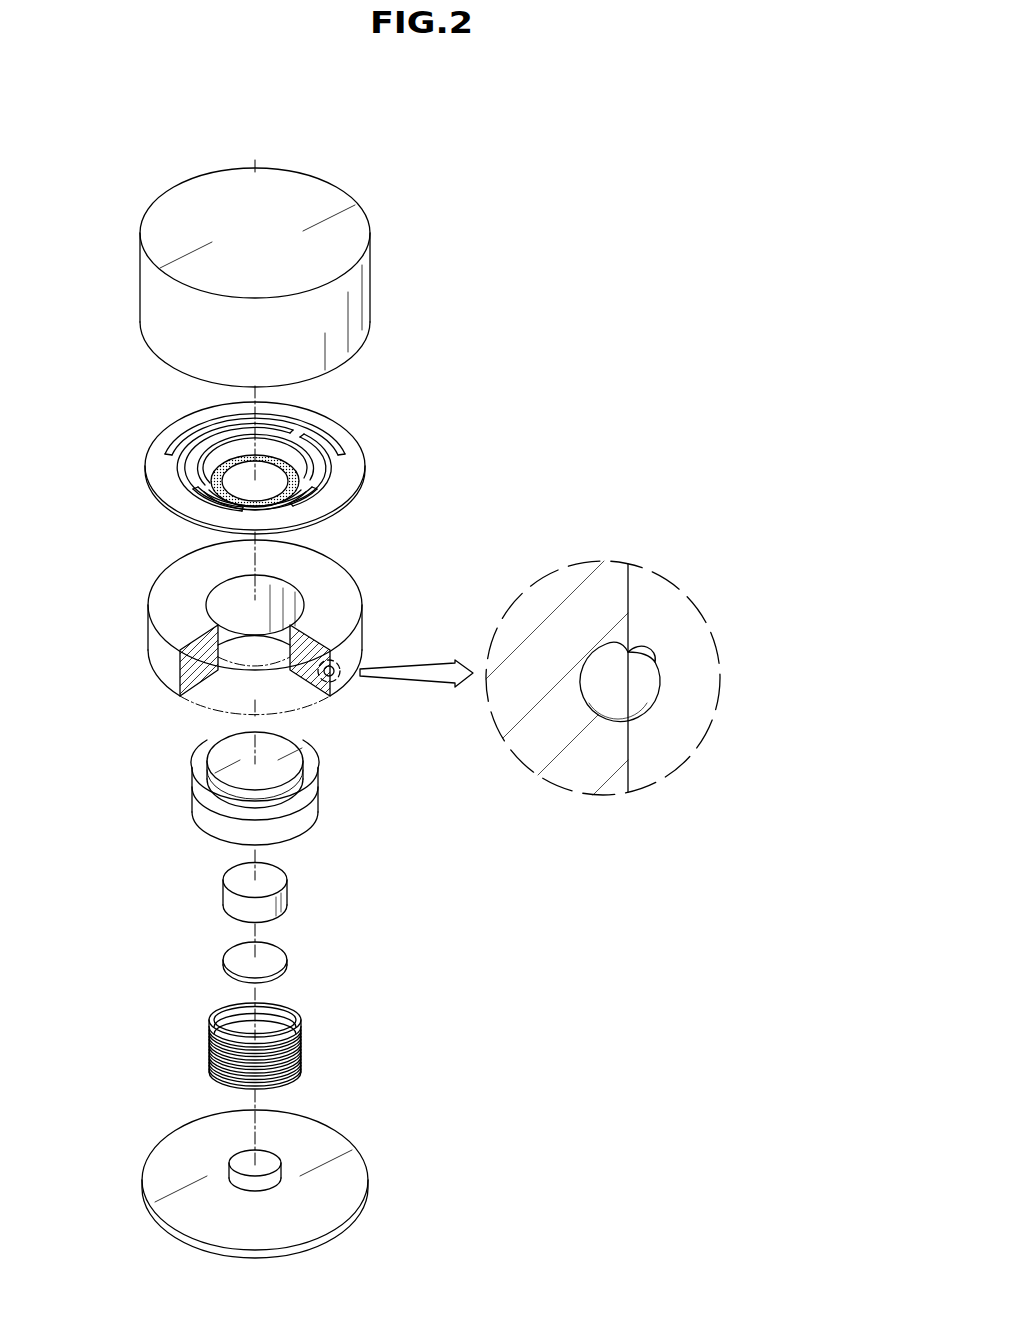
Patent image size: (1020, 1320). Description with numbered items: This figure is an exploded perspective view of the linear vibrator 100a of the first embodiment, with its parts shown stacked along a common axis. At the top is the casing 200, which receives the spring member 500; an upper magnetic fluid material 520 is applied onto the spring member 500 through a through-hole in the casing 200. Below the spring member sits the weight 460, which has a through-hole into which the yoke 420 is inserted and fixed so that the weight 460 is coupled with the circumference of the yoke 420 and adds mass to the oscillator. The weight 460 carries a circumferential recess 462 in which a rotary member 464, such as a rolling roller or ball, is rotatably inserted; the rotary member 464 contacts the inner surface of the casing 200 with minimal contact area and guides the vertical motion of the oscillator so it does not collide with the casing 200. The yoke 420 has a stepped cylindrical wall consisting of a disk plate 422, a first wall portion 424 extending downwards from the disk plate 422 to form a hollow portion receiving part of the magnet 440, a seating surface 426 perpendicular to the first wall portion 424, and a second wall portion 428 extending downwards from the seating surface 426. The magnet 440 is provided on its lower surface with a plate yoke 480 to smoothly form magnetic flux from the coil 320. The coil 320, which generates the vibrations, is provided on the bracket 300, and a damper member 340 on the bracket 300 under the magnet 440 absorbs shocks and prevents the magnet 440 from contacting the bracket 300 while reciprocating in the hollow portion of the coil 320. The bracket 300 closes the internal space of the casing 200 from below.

The linear vibrator 100a is at (117, 119).
The casing 200 is at (372, 283).
The spring member 500 is at (358, 467).
The upper magnetic fluid material 520 is at (293, 457).
The weight 460 is at (340, 600).
The circumferential recess 462 is at (640, 688).
The rotary member 464 is at (657, 663).
The yoke 420 is at (330, 778).
The disk plate 422 is at (288, 744).
The first wall portion 424 is at (300, 770).
The seating surface 426 is at (313, 783).
The second wall portion 428 is at (317, 806).
The magnet 440 is at (283, 899).
The plate yoke 480 is at (277, 962).
The coil 320 is at (303, 1043).
The damper member 340 is at (268, 1162).
The bracket 300 is at (348, 1177).